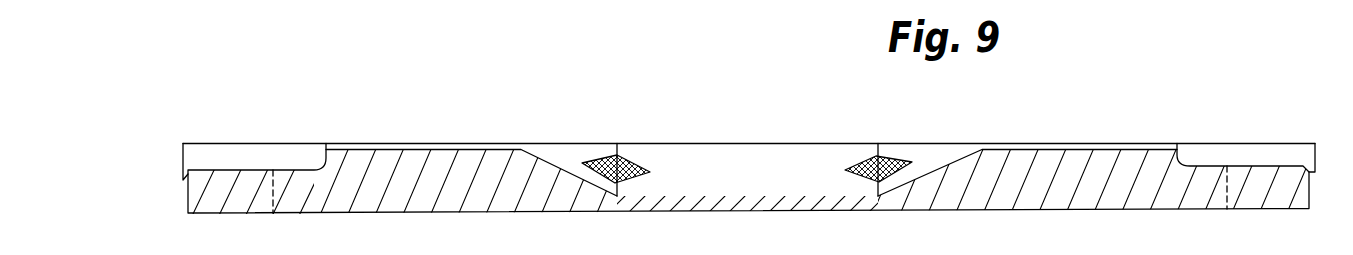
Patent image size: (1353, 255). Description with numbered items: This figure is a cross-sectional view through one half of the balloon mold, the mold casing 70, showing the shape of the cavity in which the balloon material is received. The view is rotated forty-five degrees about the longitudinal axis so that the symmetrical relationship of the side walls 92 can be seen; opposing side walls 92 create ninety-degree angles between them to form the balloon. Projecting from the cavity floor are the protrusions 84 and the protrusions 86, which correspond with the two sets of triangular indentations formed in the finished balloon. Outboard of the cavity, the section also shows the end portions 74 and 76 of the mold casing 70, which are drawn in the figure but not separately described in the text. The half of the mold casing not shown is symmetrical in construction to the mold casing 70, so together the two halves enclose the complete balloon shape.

The mold casing 70 is at (810, 134).
The left end block 74 is at (427, 150).
The right end block 76 is at (1063, 150).
The protrusions 84 is at (592, 160).
The protrusions 86 is at (900, 160).
The side walls 92 is at (704, 150).